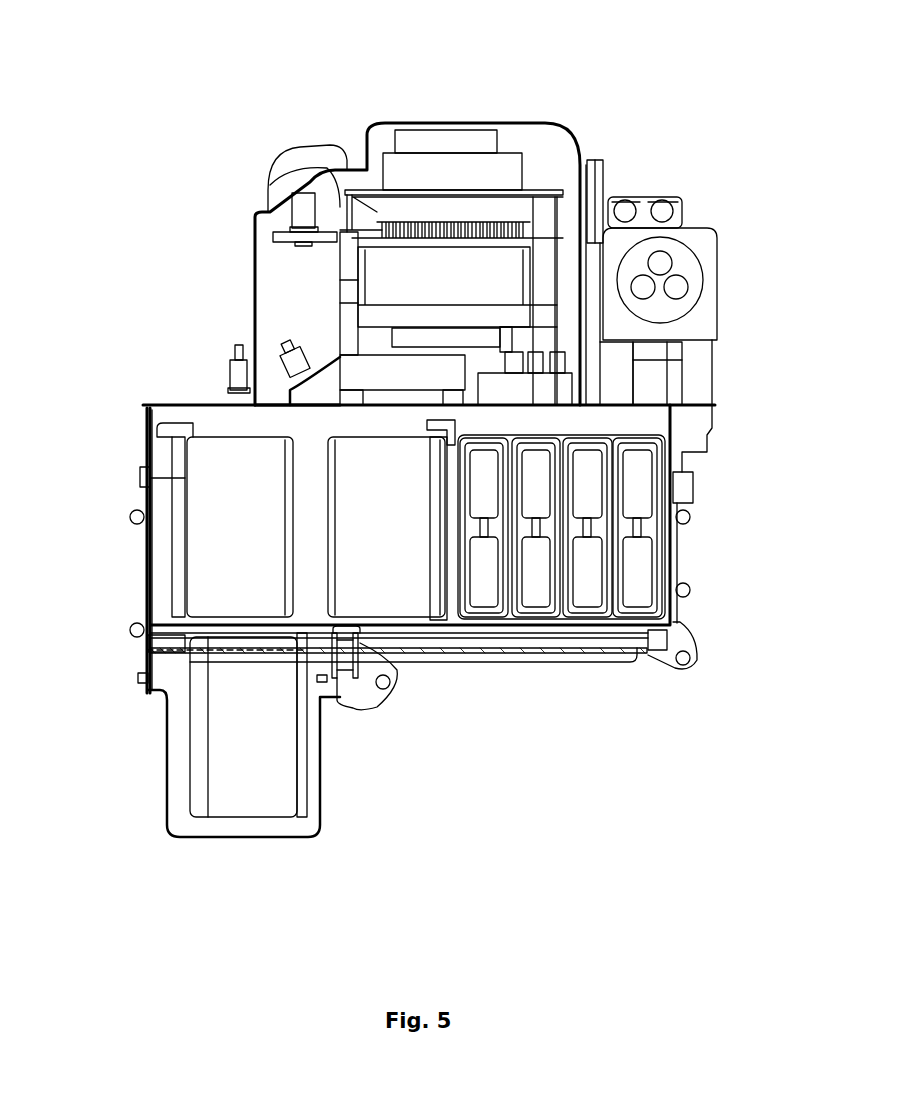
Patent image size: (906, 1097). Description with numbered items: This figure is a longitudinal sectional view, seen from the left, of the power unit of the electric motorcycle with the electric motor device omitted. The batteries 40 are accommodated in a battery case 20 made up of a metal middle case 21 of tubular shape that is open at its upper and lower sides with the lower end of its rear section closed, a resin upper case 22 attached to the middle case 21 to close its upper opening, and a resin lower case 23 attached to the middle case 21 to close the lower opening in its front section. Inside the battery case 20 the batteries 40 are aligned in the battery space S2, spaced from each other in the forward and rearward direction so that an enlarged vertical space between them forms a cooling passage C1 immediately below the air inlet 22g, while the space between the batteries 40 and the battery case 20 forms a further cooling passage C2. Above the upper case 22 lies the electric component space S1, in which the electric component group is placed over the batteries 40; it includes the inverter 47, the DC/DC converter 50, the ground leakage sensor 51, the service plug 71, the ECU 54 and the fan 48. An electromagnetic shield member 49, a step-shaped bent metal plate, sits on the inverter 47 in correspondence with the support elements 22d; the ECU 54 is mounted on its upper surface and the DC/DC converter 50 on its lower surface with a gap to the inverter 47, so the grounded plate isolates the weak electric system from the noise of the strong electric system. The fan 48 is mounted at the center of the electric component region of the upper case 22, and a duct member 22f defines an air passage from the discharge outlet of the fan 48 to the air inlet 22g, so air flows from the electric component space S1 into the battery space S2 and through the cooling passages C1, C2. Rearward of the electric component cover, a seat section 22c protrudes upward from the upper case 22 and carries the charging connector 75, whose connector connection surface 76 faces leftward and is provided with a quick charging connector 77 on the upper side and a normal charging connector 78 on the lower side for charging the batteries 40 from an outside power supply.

The battery case 20 is at (63, 785).
The middle case 21 is at (140, 563).
The upper case 22 is at (152, 450).
The lower case 23 is at (165, 748).
The seat section 22c is at (620, 378).
The support elements 22d is at (347, 342).
The duct member 22f is at (330, 355).
The air inlet 22g is at (313, 405).
The batteries 40 is at (490, 600).
The inverter 47 is at (380, 277).
The fan 48 is at (347, 377).
The electromagnetic shield member 49 is at (333, 197).
The DC/DC converter 50 is at (497, 205).
The ground leakage sensor 51 is at (458, 145).
The ECU 54 is at (430, 170).
The service plug 71 is at (307, 200).
The charging connector 75 is at (710, 243).
The connector connection surface 76 is at (706, 283).
The quick charging connector 77 is at (677, 267).
The normal charging connector 78 is at (663, 207).
The electric component space S1 is at (547, 152).
The battery space S2 is at (645, 420).
The cooling passage C1 is at (310, 527).
The cooling passage C2 is at (533, 422).